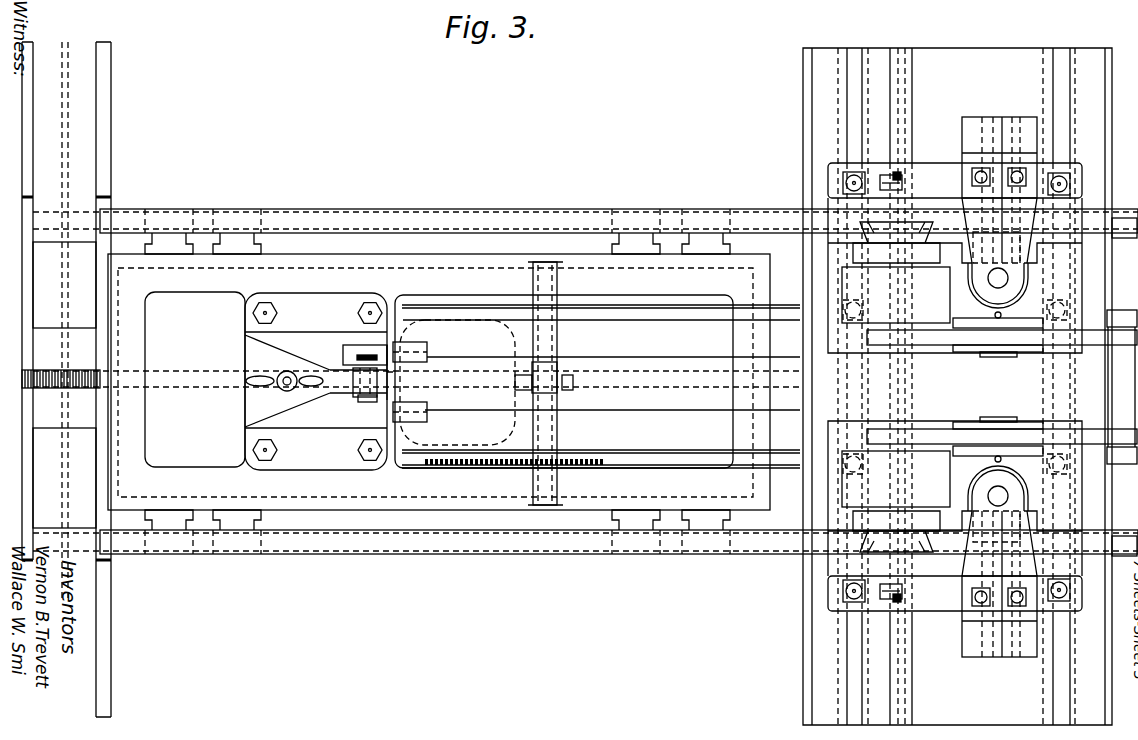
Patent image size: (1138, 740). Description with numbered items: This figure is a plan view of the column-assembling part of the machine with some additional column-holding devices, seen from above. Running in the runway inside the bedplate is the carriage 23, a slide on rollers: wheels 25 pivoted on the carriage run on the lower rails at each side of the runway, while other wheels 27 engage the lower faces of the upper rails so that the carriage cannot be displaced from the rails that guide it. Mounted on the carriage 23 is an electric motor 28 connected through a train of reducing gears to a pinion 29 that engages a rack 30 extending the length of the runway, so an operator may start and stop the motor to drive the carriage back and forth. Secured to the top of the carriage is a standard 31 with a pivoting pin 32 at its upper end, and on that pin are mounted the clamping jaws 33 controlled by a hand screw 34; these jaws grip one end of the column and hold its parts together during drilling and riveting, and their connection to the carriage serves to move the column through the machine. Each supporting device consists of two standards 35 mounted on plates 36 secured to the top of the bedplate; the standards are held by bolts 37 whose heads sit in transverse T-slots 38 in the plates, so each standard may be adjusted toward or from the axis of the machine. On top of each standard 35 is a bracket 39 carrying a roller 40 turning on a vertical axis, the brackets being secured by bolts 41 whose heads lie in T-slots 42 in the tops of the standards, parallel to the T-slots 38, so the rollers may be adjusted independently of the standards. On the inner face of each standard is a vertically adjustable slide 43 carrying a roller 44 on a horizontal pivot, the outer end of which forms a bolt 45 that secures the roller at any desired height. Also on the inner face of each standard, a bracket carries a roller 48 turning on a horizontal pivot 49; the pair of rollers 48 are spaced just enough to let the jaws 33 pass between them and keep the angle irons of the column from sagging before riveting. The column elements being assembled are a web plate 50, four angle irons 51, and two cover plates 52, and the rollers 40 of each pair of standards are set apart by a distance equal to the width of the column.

The carriage 23 is at (180, 292).
The wheels 25 is at (291, 212).
The wheels 27 is at (210, 212).
The electric motor 28 is at (501, 456).
The pinion 29 is at (570, 372).
The rack 30 is at (60, 369).
The standard 31 is at (328, 342).
The pivoting pin 32 is at (362, 400).
The clamping jaws 33 is at (428, 350).
The hand screw 34 is at (280, 390).
The standards 35 is at (929, 162).
The plates 36 is at (804, 77).
The bolts 37 is at (846, 172).
The T-slots 38 is at (852, 58).
The bracket 39 is at (966, 186).
The roller 40 is at (1020, 284).
The bolts 41 is at (1010, 172).
The T-slots 42 is at (1011, 116).
The vertically adjustable slide 43 is at (896, 387).
The roller 44 is at (896, 387).
The bolt 45 is at (898, 173).
The roller 48 is at (924, 346).
The horizontal pivot 49 is at (998, 358).
The web plate 50 is at (696, 360).
The angle irons 51 is at (636, 410).
The cover plates 52 is at (678, 304).